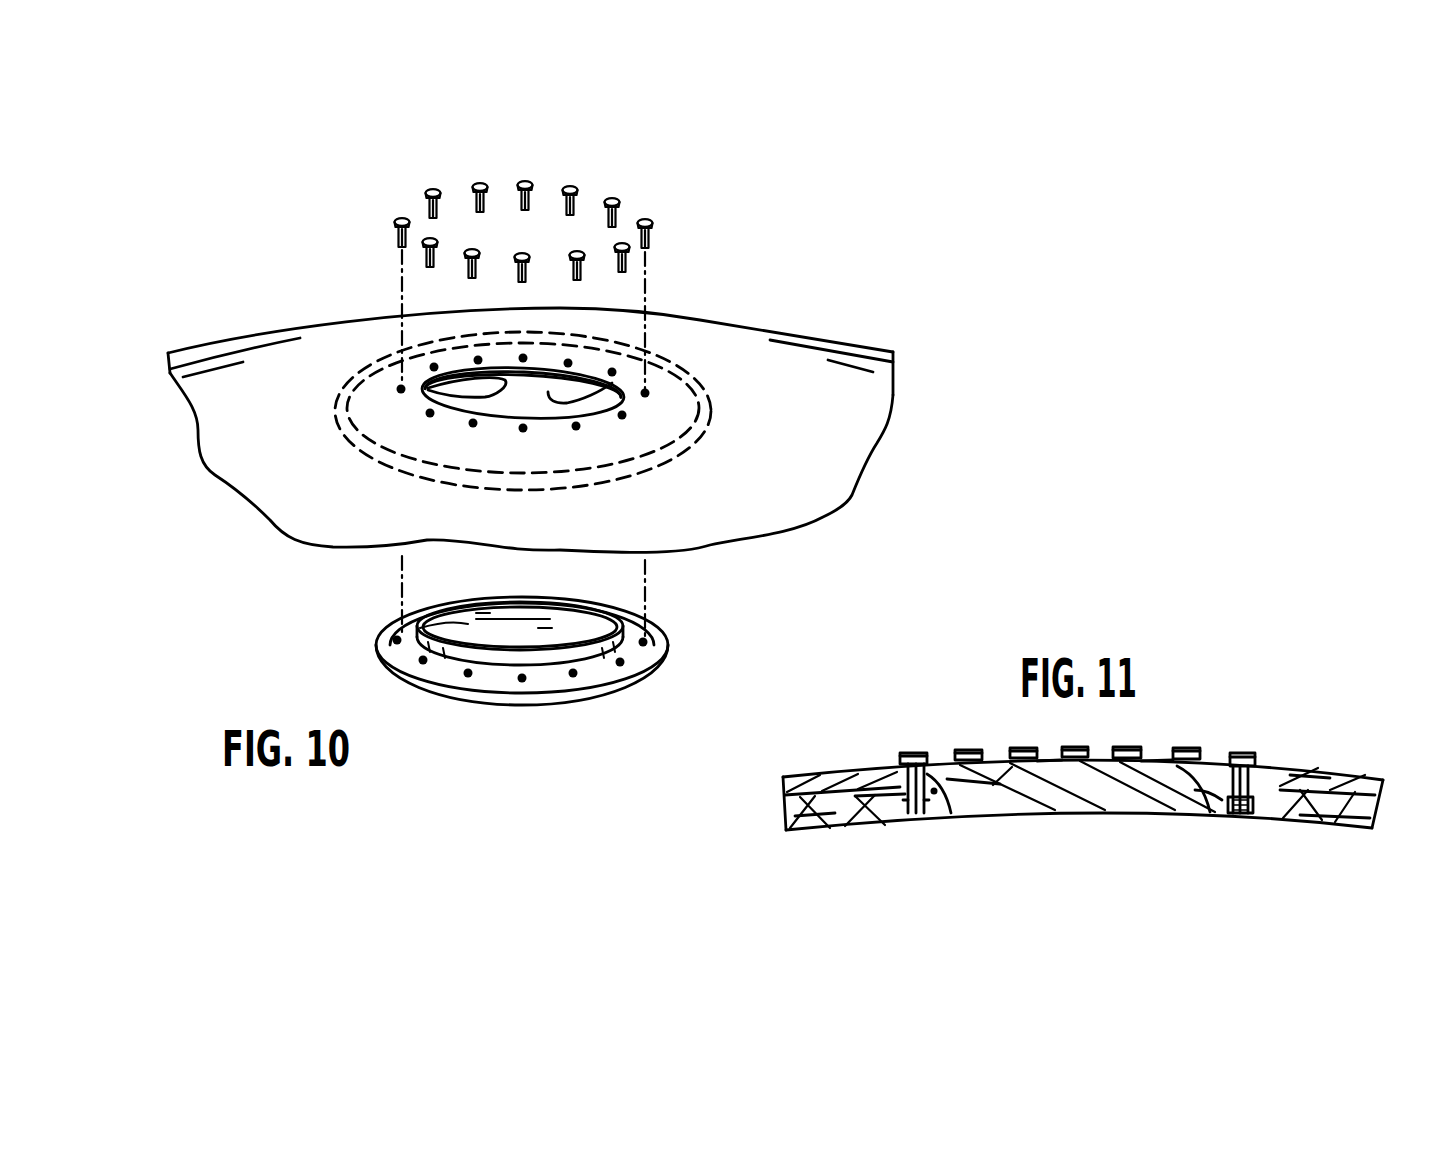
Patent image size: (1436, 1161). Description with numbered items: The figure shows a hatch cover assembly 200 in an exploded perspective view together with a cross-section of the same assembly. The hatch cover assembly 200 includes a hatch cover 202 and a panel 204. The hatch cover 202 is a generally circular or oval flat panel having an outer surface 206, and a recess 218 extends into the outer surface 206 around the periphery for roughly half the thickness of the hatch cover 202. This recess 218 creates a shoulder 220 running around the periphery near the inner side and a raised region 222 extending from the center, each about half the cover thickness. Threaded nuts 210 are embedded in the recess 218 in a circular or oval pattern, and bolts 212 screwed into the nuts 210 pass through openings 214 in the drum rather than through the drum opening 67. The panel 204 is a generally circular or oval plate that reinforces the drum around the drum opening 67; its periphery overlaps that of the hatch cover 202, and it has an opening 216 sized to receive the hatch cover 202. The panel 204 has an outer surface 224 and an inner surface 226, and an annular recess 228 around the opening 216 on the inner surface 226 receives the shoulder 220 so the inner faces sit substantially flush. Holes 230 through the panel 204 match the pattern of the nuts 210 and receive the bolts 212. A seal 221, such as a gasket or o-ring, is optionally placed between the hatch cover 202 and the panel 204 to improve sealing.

In FIG. 10, the hatch cover assembly 200 is at (712, 182).
In FIG. 11, the hatch cover assembly 200 is at (1237, 680).
In FIG. 10, the bolts 212 is at (480, 182).
In FIG. 11, the bolts 212 is at (960, 752).
In FIG. 10, the opening 216 is at (425, 390).
In FIG. 11, the opening 216 is at (1040, 757).
In FIG. 10, the drum opening 67 is at (607, 385).
In FIG. 11, the drum opening 67 is at (1202, 763).
In FIG. 10, the panel 204 is at (665, 420).
In FIG. 11, the panel 204 is at (848, 817).
In FIG. 10, the openings 214 is at (430, 413).
In FIG. 11, the openings 214 is at (930, 760).
In FIG. 10, the outer surface 206 is at (560, 627).
In FIG. 10, the recess 218 is at (627, 648).
In FIG. 11, the recess 218 is at (952, 810).
In FIG. 10, the raised region 222 is at (400, 636).
In FIG. 11, the raised region 222 is at (1203, 763).
In FIG. 10, the threaded nuts 210 is at (425, 660).
In FIG. 11, the threaded nuts 210 is at (897, 813).
In FIG. 10, the hatch cover 202 is at (467, 710).
In FIG. 11, the hatch cover 202 is at (997, 800).
In FIG. 10, the shoulder 220 is at (593, 670).
In FIG. 11, the shoulder 220 is at (1267, 820).
In FIG. 11, the outer surface 224 is at (873, 790).
In FIG. 11, the inner surface 226 is at (837, 827).
In FIG. 11, the annular recess 228 is at (1267, 813).
In FIG. 11, the holes 230 is at (1300, 780).
In FIG. 11, the seal 221 is at (1227, 823).